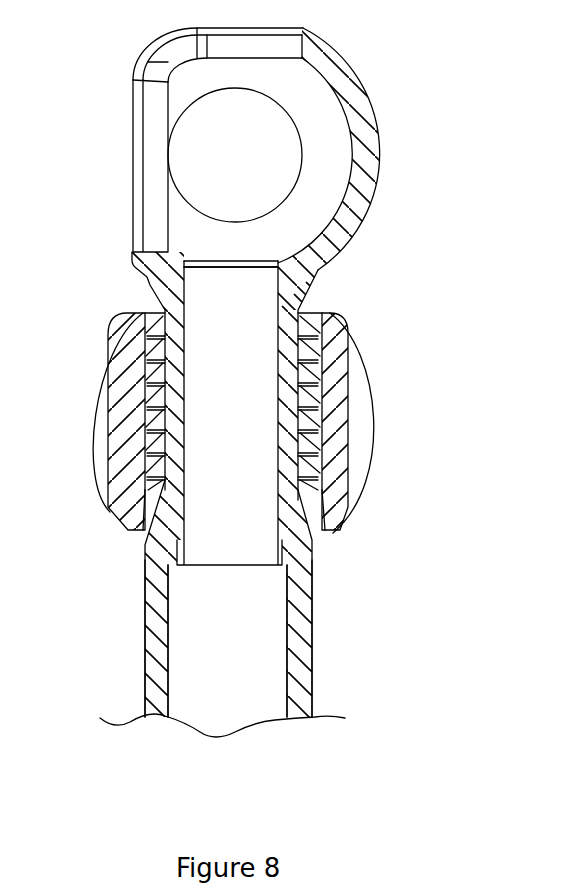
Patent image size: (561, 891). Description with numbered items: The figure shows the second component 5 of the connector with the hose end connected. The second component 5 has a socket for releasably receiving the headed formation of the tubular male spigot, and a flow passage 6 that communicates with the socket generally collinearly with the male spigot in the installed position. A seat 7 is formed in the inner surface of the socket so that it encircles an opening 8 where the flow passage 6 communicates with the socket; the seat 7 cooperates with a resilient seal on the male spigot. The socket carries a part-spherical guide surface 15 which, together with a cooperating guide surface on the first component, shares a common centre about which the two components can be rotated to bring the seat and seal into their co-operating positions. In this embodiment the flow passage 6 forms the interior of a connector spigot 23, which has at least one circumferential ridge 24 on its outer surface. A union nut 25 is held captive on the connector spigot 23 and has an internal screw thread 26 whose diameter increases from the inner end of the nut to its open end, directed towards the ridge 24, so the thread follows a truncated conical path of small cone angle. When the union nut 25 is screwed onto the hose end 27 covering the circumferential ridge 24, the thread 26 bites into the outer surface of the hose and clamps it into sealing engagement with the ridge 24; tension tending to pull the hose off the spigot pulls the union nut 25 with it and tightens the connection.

The second component 5 is at (395, 201).
The guide surface 15 is at (343, 155).
The seat 7 is at (242, 262).
The opening 8 is at (240, 295).
The flow passage 6 is at (253, 343).
The connector spigot 23 is at (288, 418).
The circumferential ridge 24 is at (297, 498).
The union nut 25 is at (137, 352).
The internal screw thread 26 is at (157, 387).
The hose end 27 is at (143, 468).